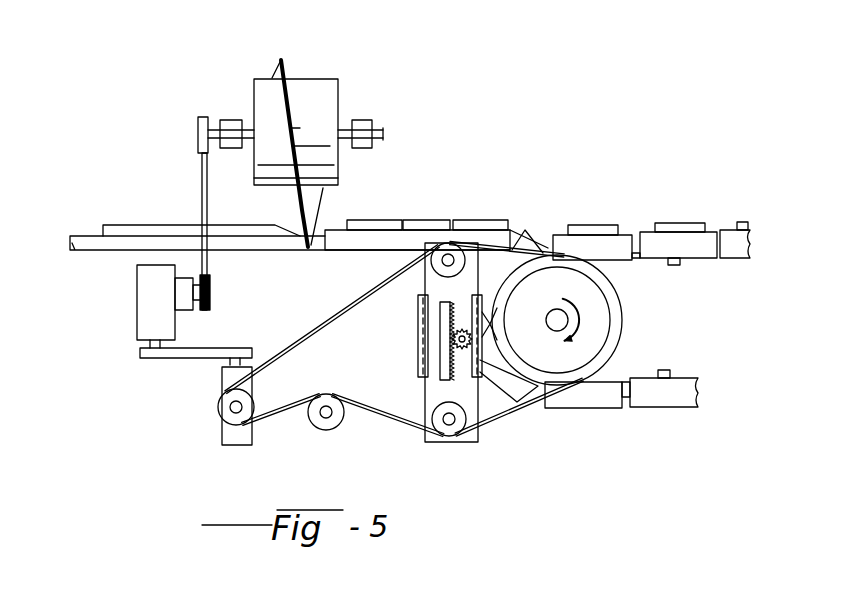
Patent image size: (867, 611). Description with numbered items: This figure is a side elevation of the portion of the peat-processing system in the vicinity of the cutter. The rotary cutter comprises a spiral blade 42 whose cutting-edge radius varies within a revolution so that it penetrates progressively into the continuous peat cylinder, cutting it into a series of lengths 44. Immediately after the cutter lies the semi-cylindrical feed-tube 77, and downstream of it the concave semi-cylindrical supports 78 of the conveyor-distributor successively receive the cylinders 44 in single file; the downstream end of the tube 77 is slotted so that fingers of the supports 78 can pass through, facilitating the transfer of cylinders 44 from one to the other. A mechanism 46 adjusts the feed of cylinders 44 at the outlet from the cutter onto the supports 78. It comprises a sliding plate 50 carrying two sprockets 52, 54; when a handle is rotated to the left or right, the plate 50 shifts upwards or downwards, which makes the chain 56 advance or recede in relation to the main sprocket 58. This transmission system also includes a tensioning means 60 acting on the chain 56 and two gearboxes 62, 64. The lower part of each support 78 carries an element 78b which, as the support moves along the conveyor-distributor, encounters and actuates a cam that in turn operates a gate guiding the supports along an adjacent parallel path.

The spiral blade 42 is at (285, 62).
The lengths 44 is at (600, 232).
The mechanism 46 is at (572, 440).
The sliding plate 50 is at (425, 378).
The sprocket 52 is at (447, 230).
The sprocket 54 is at (462, 428).
The chain 56 is at (318, 335).
The main sprocket 58 is at (622, 323).
The tensioning means 60 is at (328, 431).
The gearbox 62 is at (137, 297).
The gearbox 64 is at (222, 437).
The semi-cylindrical feed-tube 77 is at (362, 231).
The support 78 is at (672, 232).
The element 78b is at (665, 370).